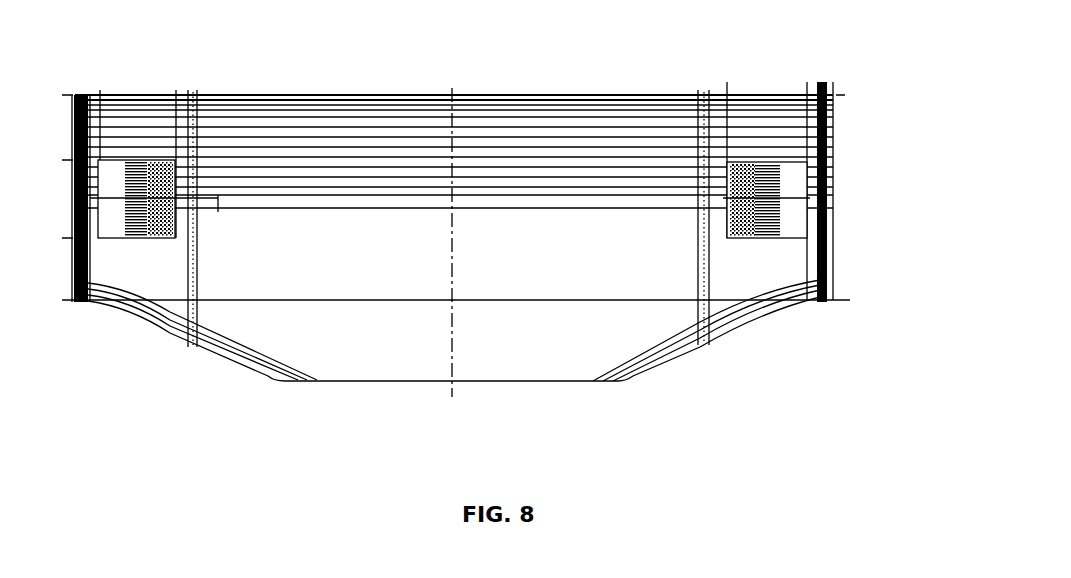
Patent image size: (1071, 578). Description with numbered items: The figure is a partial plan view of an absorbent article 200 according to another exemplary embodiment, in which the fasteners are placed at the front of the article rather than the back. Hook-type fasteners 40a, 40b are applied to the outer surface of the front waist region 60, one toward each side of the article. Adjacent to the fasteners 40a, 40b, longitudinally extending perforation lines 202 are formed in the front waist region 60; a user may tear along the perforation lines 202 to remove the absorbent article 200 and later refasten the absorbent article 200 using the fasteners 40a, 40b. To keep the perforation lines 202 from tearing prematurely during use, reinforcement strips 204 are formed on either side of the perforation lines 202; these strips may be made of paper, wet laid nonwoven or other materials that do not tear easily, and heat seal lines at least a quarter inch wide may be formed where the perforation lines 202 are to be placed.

The front waist region 60 is at (518, 82).
The absorbent article 200 is at (852, 198).
The hook-type fastener 40a is at (115, 238).
The hook-type fastener 40b is at (762, 238).
The perforation lines 202 is at (197, 278).
The reinforcement strips 204 is at (698, 257).